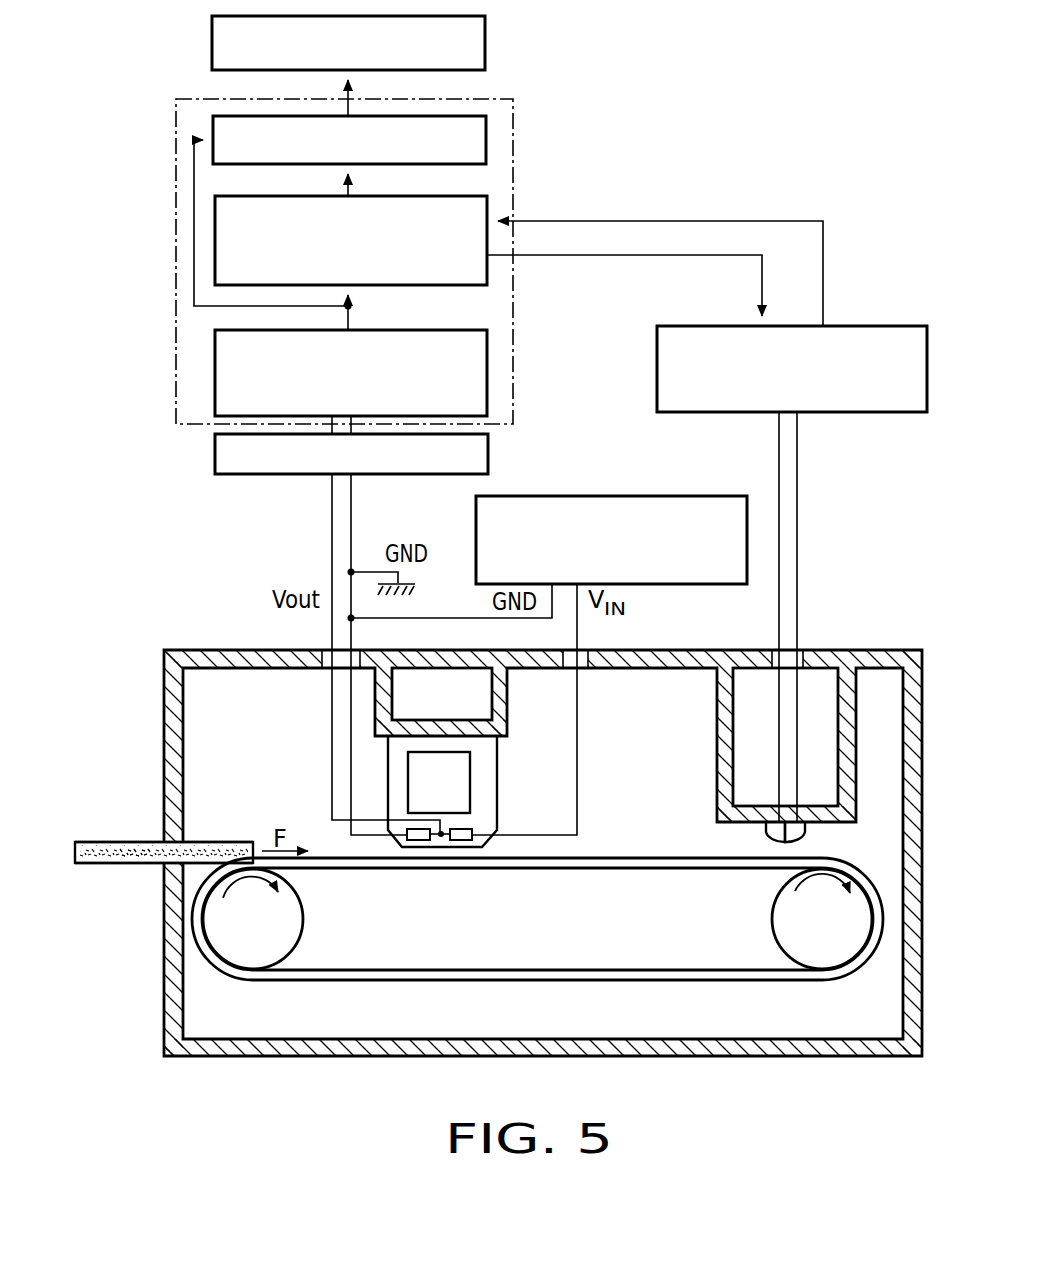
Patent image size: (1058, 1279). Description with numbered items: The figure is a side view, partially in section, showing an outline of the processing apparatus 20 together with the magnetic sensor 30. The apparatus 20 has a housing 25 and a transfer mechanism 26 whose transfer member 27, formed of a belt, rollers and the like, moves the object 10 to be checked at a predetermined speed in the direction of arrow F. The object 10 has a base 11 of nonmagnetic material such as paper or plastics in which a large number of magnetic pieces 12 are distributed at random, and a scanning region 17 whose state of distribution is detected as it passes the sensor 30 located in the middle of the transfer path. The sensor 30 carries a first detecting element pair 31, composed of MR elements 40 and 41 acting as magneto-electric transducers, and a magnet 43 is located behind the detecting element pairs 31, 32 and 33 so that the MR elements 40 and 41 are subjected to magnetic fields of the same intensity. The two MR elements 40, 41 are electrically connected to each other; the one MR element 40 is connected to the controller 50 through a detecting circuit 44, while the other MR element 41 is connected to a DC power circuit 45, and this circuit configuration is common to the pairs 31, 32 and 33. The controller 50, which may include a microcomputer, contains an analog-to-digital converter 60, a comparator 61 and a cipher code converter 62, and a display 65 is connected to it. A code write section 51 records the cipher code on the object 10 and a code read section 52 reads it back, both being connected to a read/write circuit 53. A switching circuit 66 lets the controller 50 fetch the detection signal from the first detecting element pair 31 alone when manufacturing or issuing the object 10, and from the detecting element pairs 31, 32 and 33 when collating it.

The object to be checked 10 is at (112, 822).
The base 11 is at (153, 842).
The magnetic pieces 12 is at (138, 850).
The scanning region 17 is at (233, 842).
The processing apparatus 20 is at (880, 227).
The housing 25 is at (880, 648).
The transfer mechanism 26 is at (322, 984).
The transfer member 27 is at (662, 869).
The magnetic sensor 30 is at (445, 849).
The first detecting element pair 31 is at (480, 824).
The second detecting element pair 32 is at (418, 834).
The second detecting element pair 33 is at (461, 834).
The MR element 40 is at (403, 841).
The MR element 41 is at (462, 841).
The magnet 43 is at (470, 773).
The detecting circuit 44 is at (318, 566).
The DC power circuit 45 is at (620, 496).
The controller 50 is at (176, 203).
The code write section 51 is at (766, 831).
The code read section 52 is at (806, 831).
The read/write circuit 53 is at (875, 326).
The analog-to-digital converter 60 is at (490, 367).
The comparator 61 is at (487, 143).
The cipher code converter 62 is at (490, 205).
The display 65 is at (487, 46).
The switching circuit 66 is at (490, 452).